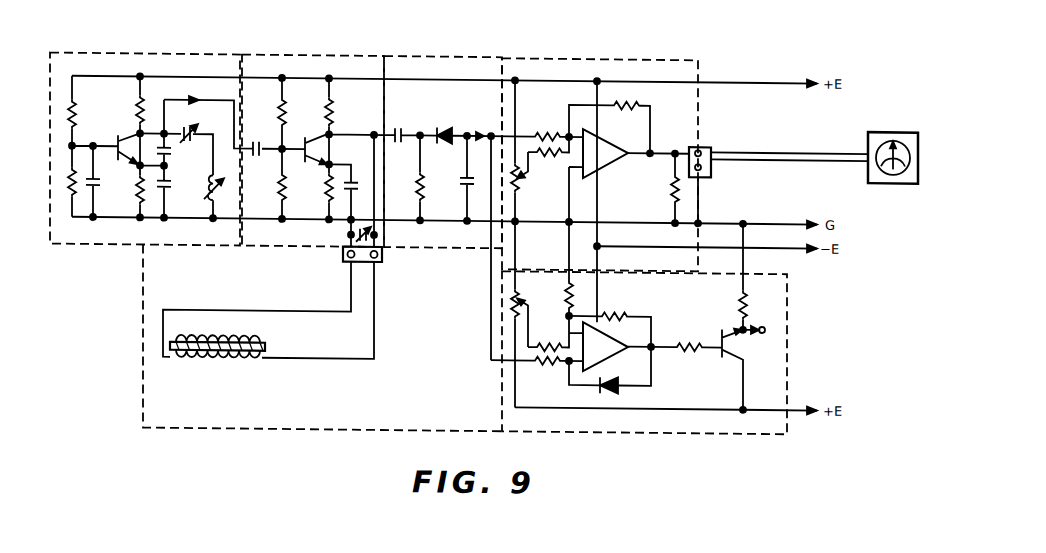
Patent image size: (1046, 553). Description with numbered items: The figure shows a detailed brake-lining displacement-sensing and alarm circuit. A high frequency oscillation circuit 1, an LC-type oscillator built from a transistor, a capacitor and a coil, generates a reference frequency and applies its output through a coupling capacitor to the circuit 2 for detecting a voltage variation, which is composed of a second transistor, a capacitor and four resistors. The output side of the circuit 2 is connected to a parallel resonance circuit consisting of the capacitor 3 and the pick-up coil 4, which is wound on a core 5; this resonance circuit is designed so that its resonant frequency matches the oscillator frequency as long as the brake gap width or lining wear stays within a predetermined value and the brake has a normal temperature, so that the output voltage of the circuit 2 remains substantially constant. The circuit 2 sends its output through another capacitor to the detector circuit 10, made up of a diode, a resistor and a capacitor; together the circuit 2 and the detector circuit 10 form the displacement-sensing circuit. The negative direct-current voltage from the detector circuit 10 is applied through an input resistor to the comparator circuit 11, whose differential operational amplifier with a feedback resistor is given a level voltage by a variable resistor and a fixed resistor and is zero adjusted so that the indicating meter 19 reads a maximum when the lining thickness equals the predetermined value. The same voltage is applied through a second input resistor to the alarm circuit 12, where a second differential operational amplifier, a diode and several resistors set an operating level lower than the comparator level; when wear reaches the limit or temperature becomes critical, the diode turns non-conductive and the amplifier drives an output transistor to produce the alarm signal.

The high frequency oscillation circuit 1 is at (181, 49).
The circuit for detecting a voltage variation 2 is at (331, 49).
The capacitor 3 is at (384, 240).
The pick-up coil 4 is at (200, 356).
The coil core 5 is at (267, 345).
The detector circuit 10 is at (447, 49).
The comparator circuit 11 is at (647, 49).
The alarm circuit 12 is at (662, 431).
The indicating meter 19 is at (881, 121).